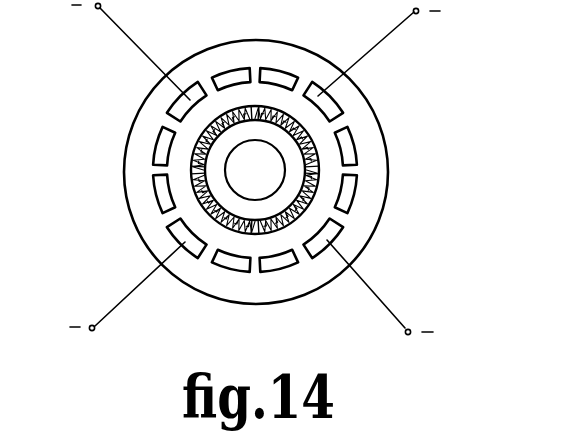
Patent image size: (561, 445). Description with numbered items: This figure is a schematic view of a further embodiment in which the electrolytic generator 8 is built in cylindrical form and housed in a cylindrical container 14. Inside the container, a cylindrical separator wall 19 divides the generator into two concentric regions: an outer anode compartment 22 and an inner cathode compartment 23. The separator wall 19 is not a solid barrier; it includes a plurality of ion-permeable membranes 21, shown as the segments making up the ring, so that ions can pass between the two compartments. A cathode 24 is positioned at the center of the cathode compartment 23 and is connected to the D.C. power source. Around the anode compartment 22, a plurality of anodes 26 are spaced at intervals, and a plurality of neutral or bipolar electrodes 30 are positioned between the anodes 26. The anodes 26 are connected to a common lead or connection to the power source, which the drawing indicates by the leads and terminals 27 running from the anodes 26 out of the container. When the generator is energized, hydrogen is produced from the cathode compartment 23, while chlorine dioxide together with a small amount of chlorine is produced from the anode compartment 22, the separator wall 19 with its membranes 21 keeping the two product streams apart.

The electrolytic generator 8 is at (102, 202).
The cylindrical container 14 is at (125, 153).
The separator wall 19 is at (250, 236).
The ion-permeable membranes 21 is at (207, 127).
The anode compartment 22 is at (198, 276).
The cathode compartment 23 is at (293, 157).
The cathode 24 is at (269, 183).
The anodes 26 is at (192, 98).
The winding terminals 27 is at (121, 30).
The neutral or bipolar electrodes 30 is at (281, 77).